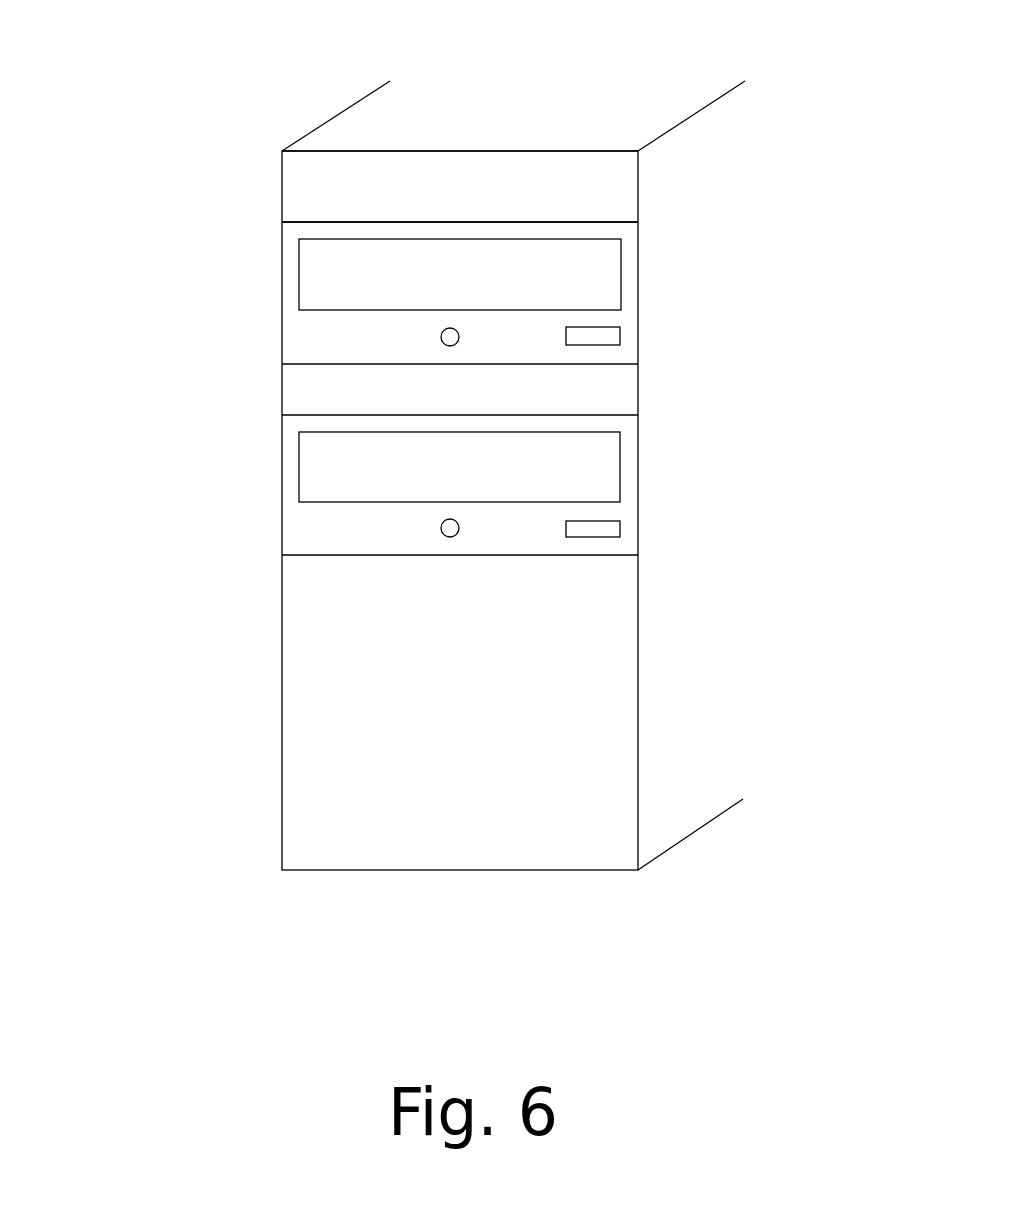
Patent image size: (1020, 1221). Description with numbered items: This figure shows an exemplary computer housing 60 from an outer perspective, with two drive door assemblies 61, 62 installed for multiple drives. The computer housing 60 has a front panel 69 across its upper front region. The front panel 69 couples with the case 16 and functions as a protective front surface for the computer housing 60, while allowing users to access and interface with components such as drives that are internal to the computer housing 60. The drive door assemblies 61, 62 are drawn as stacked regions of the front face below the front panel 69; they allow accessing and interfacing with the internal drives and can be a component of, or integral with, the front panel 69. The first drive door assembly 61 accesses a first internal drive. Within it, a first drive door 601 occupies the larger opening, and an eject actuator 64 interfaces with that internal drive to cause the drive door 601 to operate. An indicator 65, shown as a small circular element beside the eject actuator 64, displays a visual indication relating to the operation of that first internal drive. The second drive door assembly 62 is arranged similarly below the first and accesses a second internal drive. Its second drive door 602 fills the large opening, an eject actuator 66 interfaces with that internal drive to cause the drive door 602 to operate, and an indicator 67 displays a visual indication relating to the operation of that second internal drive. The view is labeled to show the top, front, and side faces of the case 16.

The computer housing 60 is at (263, 46).
The case 16 is at (740, 247).
The front panel 69 is at (467, 186).
The drive door assembly 61 is at (469, 291).
The drive door assembly 62 is at (469, 501).
The drive door 601 is at (556, 278).
The drive door 602 is at (573, 474).
The indicator 65 is at (440, 337).
The indicator 67 is at (440, 528).
The eject actuator 64 is at (620, 335).
The eject actuator 66 is at (620, 527).